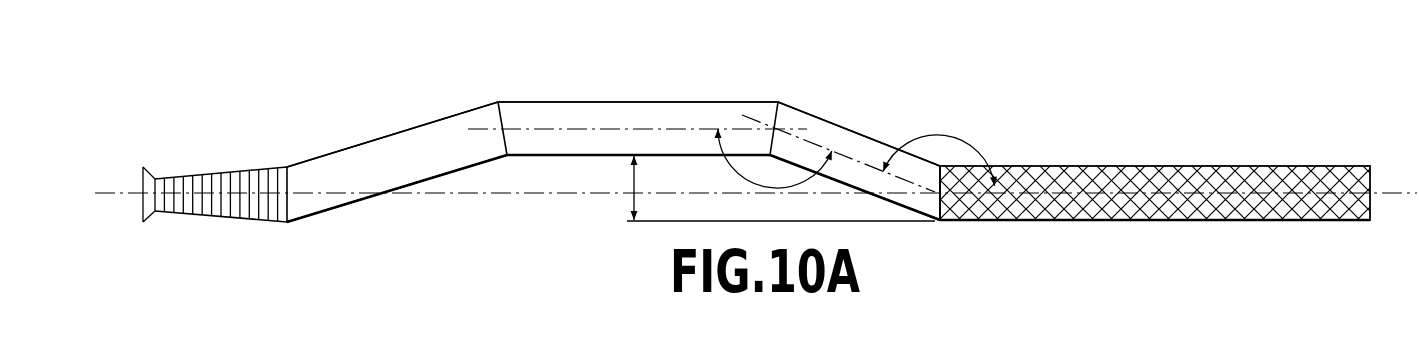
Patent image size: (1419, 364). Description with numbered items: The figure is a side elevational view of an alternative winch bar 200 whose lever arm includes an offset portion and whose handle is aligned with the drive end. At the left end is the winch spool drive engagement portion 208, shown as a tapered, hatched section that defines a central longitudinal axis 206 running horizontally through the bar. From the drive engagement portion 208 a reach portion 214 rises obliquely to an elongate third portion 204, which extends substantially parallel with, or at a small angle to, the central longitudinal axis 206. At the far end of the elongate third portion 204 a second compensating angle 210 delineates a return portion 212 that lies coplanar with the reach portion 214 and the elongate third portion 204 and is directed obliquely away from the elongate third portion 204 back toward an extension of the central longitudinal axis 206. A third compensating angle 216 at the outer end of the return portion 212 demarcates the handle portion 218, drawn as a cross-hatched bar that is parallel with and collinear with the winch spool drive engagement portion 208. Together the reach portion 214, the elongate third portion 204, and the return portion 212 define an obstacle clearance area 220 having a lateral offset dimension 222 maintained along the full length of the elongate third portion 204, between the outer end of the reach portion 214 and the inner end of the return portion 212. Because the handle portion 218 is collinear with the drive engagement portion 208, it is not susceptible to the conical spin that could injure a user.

The winch bar 200 is at (736, 94).
The elongate third portion 204 is at (640, 102).
The central longitudinal axis 206 is at (133, 192).
The winch spool drive engagement portion 208 is at (220, 221).
The second compensating angle 210 is at (743, 178).
The return portion 212 is at (866, 135).
The reach portion 214 is at (393, 134).
The third compensating angle 216 is at (957, 134).
The handle portion 218 is at (1260, 166).
The obstacle clearance area 220 is at (557, 173).
The lateral offset dimension 222 is at (632, 202).